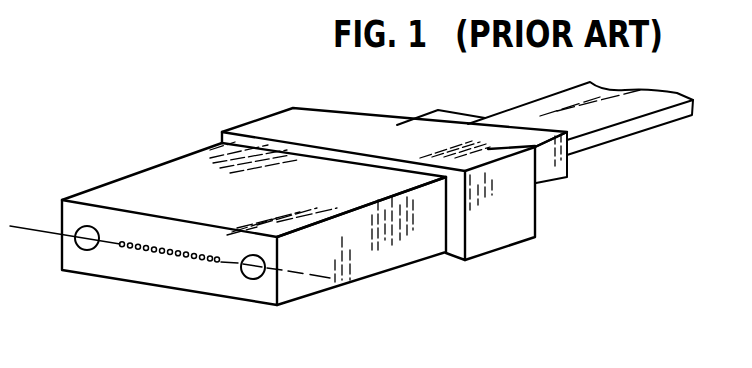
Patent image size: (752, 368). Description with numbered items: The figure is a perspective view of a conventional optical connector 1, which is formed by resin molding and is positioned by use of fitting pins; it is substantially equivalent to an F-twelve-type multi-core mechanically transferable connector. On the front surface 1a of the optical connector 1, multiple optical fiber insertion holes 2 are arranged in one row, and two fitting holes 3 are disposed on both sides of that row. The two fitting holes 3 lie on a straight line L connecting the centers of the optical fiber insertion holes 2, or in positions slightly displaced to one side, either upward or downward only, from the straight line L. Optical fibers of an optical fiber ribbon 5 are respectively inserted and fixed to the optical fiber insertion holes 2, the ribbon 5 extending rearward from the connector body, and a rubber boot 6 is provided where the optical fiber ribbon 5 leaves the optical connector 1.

The optical connector 1 is at (172, 138).
The front surface 1a is at (78, 216).
The straight line L is at (115, 240).
The fitting hole 3 is at (86, 250).
The optical fiber insertion hole 2 is at (165, 259).
The optical fiber ribbon 5 is at (644, 127).
The rubber boot 6 is at (558, 177).